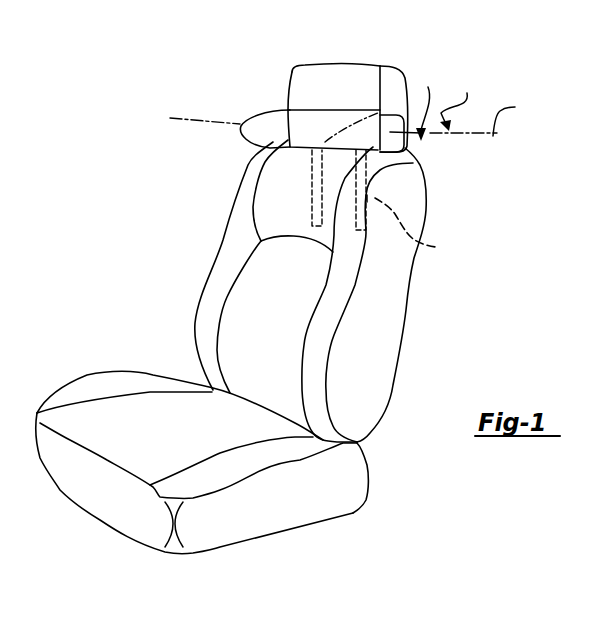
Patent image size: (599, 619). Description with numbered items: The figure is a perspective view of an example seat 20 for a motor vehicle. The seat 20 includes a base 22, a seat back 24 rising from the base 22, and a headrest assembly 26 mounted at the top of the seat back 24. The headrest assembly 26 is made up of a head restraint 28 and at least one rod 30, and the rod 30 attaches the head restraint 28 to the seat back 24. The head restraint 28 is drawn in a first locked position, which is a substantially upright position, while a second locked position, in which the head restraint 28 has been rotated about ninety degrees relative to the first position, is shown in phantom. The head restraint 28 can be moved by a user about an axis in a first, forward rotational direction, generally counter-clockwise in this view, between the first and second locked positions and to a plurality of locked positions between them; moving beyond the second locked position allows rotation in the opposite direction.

The seat 20 is at (186, 233).
The base 22 is at (92, 385).
The seat back 24 is at (245, 198).
The headrest assembly 26 is at (285, 83).
The head restraint 28 is at (336, 80).
The rod 30 is at (412, 226).